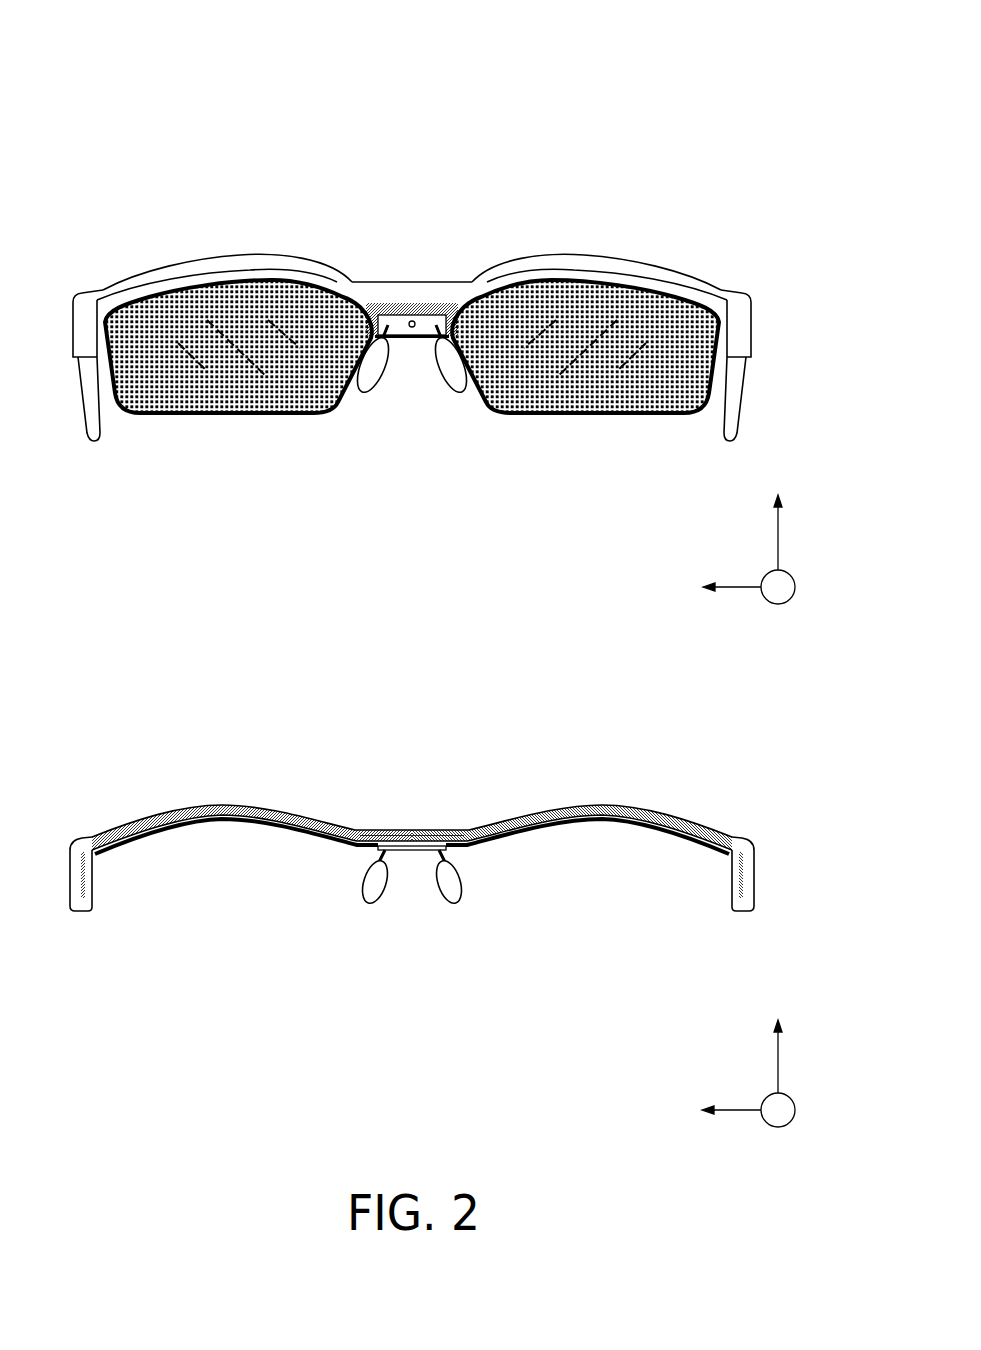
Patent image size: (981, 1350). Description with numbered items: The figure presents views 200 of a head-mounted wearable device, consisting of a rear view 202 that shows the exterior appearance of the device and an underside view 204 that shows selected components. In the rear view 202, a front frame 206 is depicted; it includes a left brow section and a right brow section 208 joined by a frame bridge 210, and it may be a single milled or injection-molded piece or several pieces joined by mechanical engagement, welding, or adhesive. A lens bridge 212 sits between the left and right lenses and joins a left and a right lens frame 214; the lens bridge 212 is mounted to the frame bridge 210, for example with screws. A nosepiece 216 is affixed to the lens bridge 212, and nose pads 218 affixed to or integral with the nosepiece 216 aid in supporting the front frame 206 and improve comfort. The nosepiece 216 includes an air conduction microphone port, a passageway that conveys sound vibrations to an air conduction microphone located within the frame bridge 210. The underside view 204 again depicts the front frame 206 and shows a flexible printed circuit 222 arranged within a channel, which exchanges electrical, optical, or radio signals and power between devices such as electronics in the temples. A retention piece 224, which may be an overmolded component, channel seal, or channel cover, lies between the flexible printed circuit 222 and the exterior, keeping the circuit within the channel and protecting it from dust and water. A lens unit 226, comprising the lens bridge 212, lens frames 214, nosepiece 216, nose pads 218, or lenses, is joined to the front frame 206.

The views 200 is at (665, 47).
The rear view 202 is at (180, 72).
The underside view 204 is at (219, 716).
The front frame 206 is at (185, 808).
The brow section 208 is at (750, 167).
The frame bridge 210 is at (470, 200).
The lens bridge 212 is at (422, 337).
The lens frame 214 is at (583, 417).
The nosepiece 216 is at (335, 1056).
The nose pad 218 is at (305, 965).
The flexible printed circuit (FPC) 222 is at (443, 838).
The retention piece 224 is at (234, 802).
The lens unit 226 is at (705, 858).